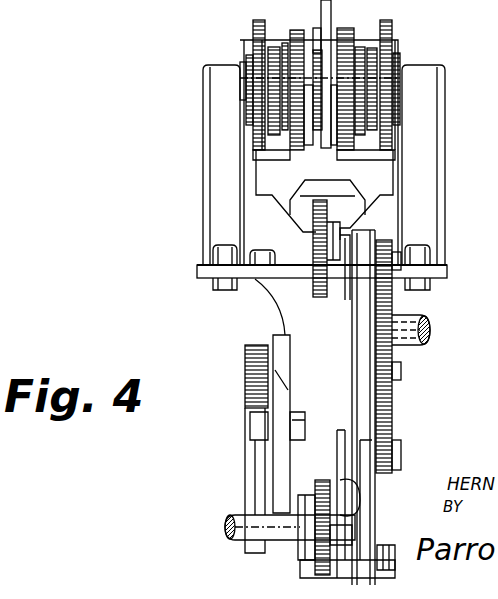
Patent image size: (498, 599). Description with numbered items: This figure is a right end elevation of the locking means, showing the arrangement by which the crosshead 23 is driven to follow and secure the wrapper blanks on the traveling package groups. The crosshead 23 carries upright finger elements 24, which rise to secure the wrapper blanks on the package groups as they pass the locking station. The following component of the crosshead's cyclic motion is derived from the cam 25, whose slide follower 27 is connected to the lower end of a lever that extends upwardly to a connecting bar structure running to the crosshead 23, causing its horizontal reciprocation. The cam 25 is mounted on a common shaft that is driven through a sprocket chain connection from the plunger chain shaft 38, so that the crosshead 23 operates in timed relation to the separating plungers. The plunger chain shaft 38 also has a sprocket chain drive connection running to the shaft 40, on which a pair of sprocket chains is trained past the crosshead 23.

The crosshead 23 is at (314, 30).
The finger elements 24 is at (333, 15).
The shaft 40 is at (395, 92).
The plunger chain shaft 38 is at (419, 335).
The slide follower 27 is at (280, 393).
The cam 25 is at (248, 446).